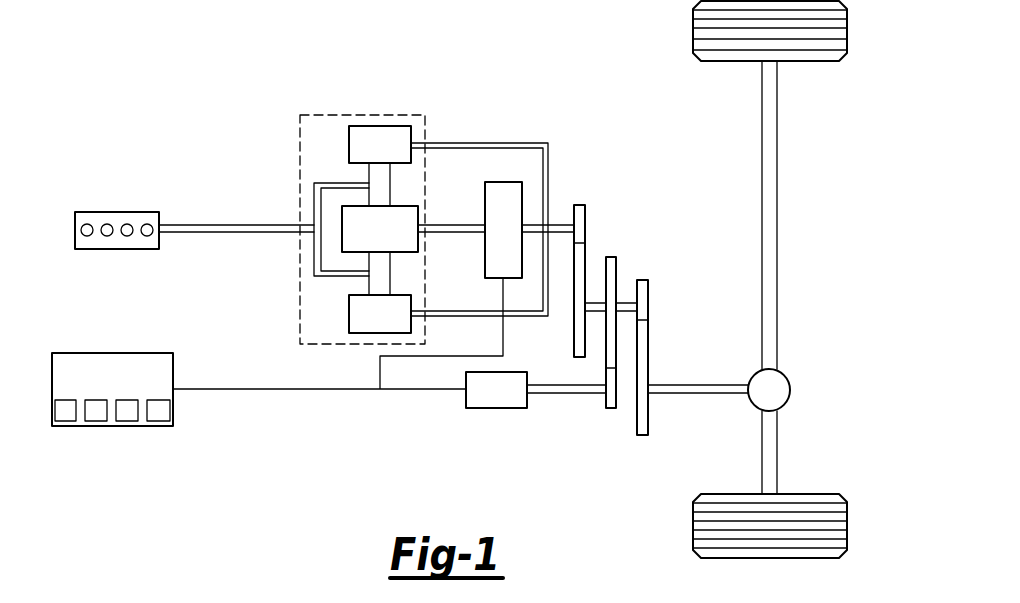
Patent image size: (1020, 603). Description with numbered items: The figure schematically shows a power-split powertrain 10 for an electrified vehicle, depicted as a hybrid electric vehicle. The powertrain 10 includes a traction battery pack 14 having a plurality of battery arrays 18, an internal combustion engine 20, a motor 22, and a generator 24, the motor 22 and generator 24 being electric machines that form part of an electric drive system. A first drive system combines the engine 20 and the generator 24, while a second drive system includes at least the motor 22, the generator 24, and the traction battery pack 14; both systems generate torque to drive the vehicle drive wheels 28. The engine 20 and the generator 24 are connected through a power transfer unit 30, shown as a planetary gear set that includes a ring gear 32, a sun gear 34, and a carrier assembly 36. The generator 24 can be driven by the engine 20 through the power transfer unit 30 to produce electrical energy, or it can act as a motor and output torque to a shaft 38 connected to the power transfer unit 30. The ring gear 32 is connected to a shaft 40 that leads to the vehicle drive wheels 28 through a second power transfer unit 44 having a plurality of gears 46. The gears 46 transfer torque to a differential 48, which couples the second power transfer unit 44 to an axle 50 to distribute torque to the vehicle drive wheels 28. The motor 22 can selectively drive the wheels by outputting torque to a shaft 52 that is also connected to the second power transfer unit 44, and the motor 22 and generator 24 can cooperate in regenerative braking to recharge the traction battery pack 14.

The powertrain 10 is at (158, 40).
The traction battery pack 14 is at (112, 387).
The battery arrays 18 is at (66, 423).
The internal combustion engine 20 is at (75, 212).
The motor 22 is at (496, 410).
The generator 24 is at (522, 190).
The vehicle drive wheels 28 is at (848, 30).
The power transfer unit 30 is at (370, 225).
The ring gear 32 is at (349, 147).
The sun gear 34 is at (420, 255).
The carrier assembly 36 is at (314, 207).
The shaft 38 is at (453, 225).
The shaft 40 is at (562, 236).
The second power transfer unit 44 is at (637, 323).
The gears 46 is at (587, 222).
The differential 48 is at (791, 390).
The axle 50 is at (779, 215).
The shaft 52 is at (568, 395).